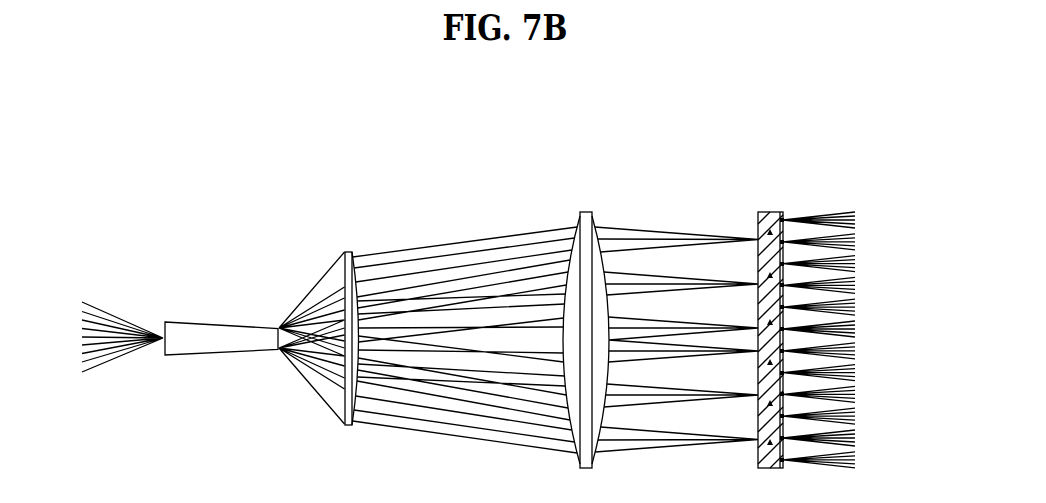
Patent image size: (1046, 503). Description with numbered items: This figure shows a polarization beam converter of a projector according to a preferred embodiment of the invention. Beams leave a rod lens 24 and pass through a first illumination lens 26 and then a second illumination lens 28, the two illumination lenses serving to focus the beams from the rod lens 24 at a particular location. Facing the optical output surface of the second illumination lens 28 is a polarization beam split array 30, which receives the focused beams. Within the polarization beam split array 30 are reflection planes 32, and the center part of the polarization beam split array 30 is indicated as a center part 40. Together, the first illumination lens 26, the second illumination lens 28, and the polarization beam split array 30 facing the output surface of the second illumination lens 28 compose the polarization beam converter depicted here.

The rod lens 24 is at (213, 331).
The first illumination lens 26 is at (348, 252).
The second illumination lens 28 is at (585, 212).
The polarization beam split array 30 is at (768, 212).
The reflection planes 32 is at (789, 217).
The center part of the polarization beam split array 40 is at (832, 332).